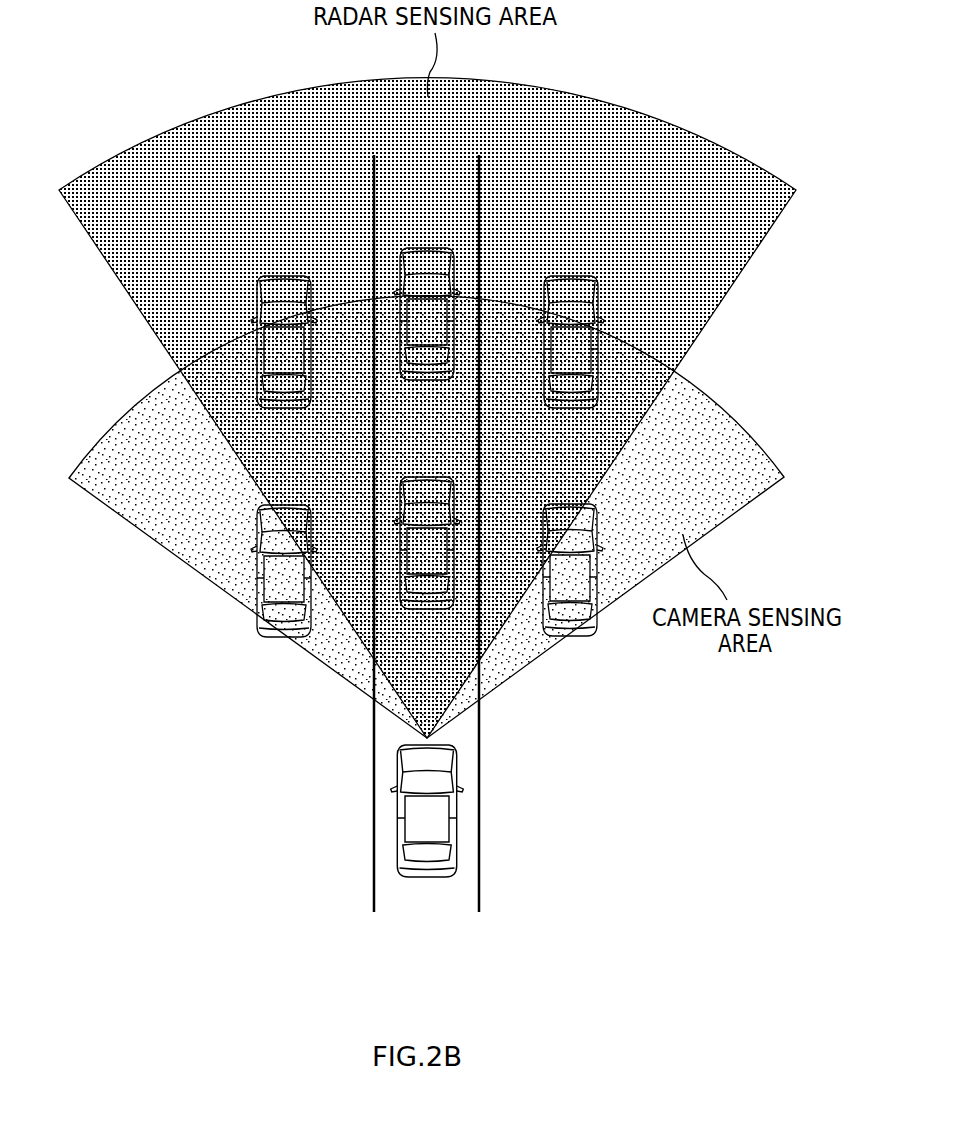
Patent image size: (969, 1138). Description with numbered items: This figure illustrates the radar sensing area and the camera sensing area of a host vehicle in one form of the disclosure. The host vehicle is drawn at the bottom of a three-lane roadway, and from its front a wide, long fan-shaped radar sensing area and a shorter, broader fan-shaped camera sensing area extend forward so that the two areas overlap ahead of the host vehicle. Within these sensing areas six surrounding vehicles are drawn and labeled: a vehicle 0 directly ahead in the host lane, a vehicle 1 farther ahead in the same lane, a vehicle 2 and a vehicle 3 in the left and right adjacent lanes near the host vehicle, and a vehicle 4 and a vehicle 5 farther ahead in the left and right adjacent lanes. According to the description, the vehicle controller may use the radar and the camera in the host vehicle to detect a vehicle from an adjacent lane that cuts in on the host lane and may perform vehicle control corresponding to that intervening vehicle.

The preceding vehicle 0 is at (427, 543).
The surrounding vehicle 1 is at (427, 314).
The surrounding vehicle 2 is at (284, 571).
The surrounding vehicle 3 is at (570, 570).
The surrounding vehicle 4 is at (284, 342).
The surrounding vehicle 5 is at (571, 342).